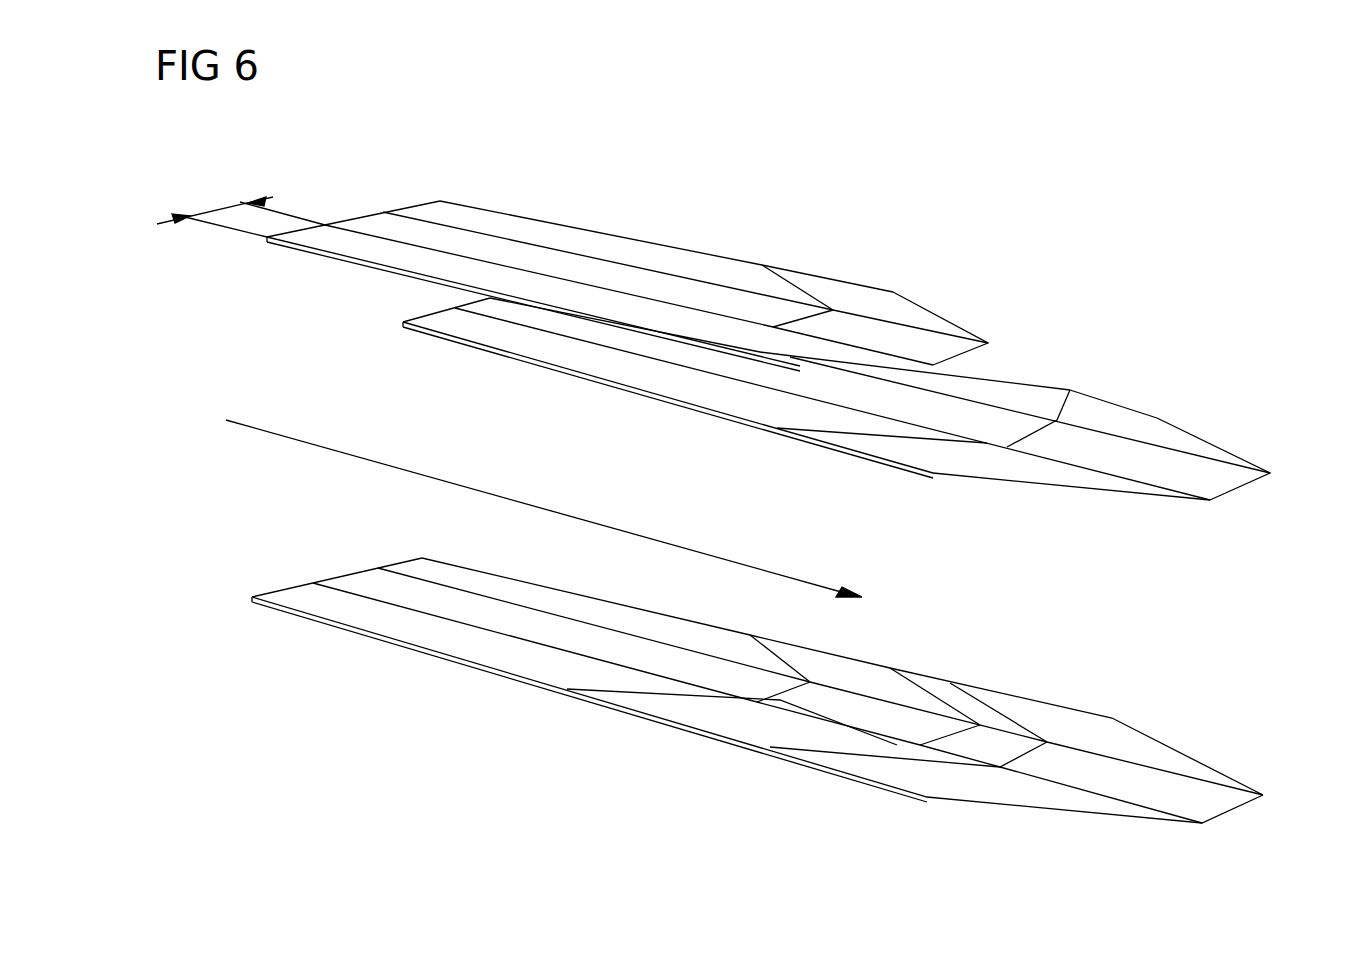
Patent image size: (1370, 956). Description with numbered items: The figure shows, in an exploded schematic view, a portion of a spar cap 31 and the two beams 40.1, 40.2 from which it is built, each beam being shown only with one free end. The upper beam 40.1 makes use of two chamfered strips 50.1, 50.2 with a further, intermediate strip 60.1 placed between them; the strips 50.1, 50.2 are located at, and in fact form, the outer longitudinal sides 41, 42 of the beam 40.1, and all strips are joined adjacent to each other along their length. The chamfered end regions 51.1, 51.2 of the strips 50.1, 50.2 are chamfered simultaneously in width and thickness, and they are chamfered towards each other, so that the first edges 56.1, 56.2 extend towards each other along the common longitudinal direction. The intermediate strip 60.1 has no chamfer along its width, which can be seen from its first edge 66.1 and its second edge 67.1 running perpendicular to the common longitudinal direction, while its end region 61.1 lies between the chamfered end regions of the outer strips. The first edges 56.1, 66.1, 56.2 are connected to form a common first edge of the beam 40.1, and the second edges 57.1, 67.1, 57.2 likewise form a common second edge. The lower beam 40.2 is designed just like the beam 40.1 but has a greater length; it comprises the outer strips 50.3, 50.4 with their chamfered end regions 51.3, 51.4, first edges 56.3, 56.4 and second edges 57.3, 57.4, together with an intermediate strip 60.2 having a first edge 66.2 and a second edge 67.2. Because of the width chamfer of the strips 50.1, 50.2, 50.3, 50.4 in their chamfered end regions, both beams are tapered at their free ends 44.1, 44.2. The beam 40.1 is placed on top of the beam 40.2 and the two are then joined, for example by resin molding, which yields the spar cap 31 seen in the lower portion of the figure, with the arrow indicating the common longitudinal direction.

The spar cap 31 is at (1235, 762).
The beam 40.1 is at (526, 168).
The beam 40.2 is at (1229, 398).
The outer longitudinal side 41 is at (580, 225).
The outer longitudinal side 42 is at (380, 275).
The free end 44.1 is at (990, 331).
The free end 44.2 is at (1234, 516).
The strip 50.1 is at (427, 208).
The strip 50.2 is at (343, 250).
The strip 50.3 is at (1000, 393).
The strip 50.4 is at (545, 345).
The chamfered end region 51.1 is at (855, 300).
The chamfered end region 51.2 is at (690, 370).
The chamfered end region 51.3 is at (1155, 428).
The chamfered end region 51.4 is at (980, 483).
The first edge 56.1 is at (795, 300).
The first edge 56.2 is at (680, 320).
The first edge 56.3 is at (1060, 410).
The first edge 56.4 is at (900, 440).
The second edge 57.1 is at (945, 322).
The second edge 57.2 is at (705, 415).
The second edge 57.3 is at (1275, 470).
The second edge 57.4 is at (1170, 503).
The intermediate strip 60.1 is at (363, 222).
The intermediate strip 60.2 is at (495, 302).
The end region 61.1 is at (880, 330).
The first edge 66.1 is at (805, 317).
The first edge 66.2 is at (1035, 475).
The second edge 67.1 is at (990, 350).
The second edge 67.2 is at (1255, 495).